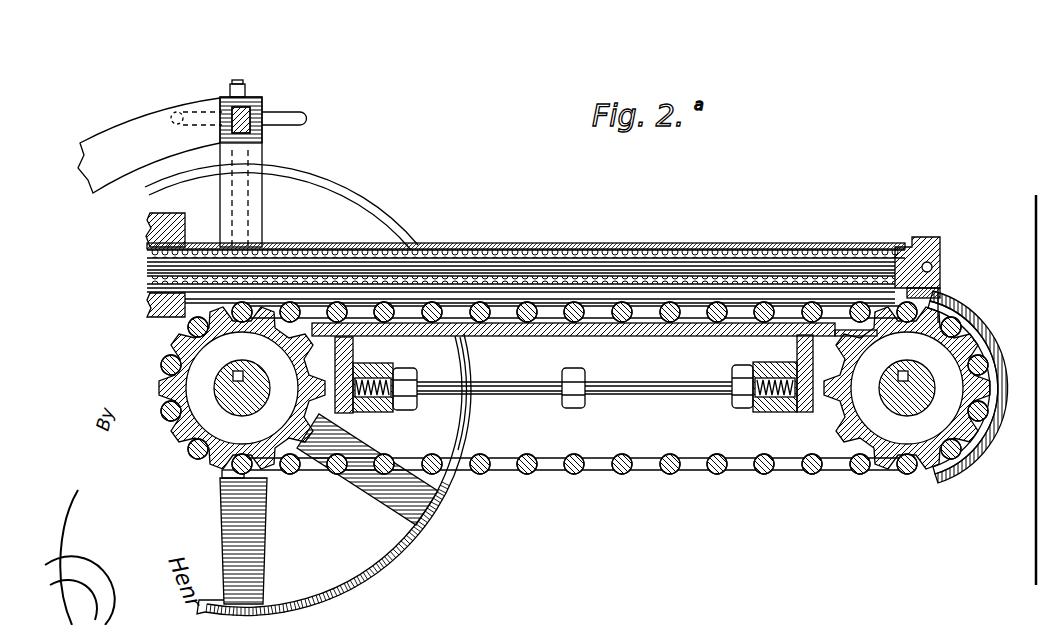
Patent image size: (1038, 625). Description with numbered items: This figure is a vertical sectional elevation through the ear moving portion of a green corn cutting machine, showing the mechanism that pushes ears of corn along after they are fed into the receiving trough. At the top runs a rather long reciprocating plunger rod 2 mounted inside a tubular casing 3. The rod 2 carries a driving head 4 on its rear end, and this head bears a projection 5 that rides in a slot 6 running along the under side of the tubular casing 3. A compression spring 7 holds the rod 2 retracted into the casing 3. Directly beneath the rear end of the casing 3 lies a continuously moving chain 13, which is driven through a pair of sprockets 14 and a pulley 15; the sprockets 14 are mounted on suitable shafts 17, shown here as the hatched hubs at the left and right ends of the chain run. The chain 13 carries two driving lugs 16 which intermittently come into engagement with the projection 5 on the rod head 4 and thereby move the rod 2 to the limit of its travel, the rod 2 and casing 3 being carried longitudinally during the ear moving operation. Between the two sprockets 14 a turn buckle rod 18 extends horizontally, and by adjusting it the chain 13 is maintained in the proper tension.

The reciprocating plunger rod 2 is at (656, 263).
The tubular casing 3 is at (566, 245).
The driving head 4 is at (897, 252).
The projection 5 is at (940, 268).
The slot 6 is at (738, 288).
The compression spring 7 is at (796, 246).
The chain 13 is at (676, 458).
The sprockets 14 is at (197, 446).
The pulley 15 is at (402, 548).
The driving lugs 16 is at (945, 292).
The shafts 17 is at (254, 400).
The turn buckle rod 18 is at (600, 398).